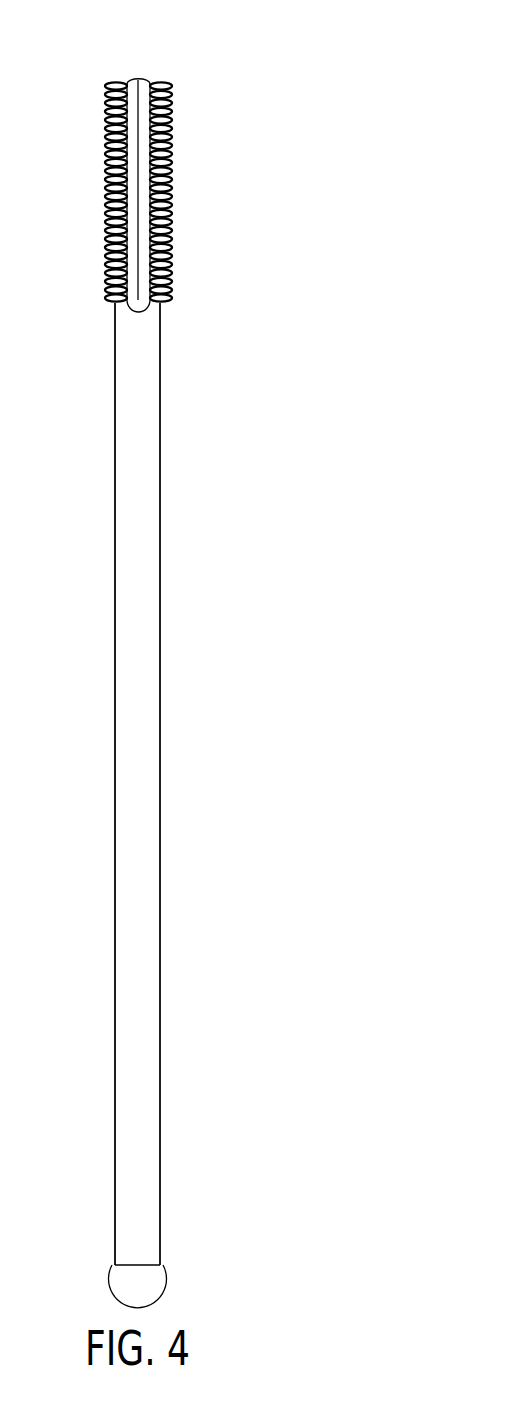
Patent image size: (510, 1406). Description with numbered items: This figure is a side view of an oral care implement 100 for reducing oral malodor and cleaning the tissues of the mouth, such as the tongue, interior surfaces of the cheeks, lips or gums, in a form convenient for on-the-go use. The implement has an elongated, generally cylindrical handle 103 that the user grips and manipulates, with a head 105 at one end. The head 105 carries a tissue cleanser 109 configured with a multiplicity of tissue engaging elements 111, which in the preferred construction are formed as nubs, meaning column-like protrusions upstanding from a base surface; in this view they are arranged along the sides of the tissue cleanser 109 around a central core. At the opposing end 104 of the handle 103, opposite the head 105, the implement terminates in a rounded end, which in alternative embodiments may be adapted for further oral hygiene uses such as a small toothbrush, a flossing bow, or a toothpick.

The oral care implement 100 is at (325, 148).
The handle 103 is at (160, 787).
The opposing end 104 is at (167, 1280).
The head 105 is at (143, 79).
The tissue cleanser 109 is at (128, 114).
The tissue engaging elements 111 is at (104, 207).